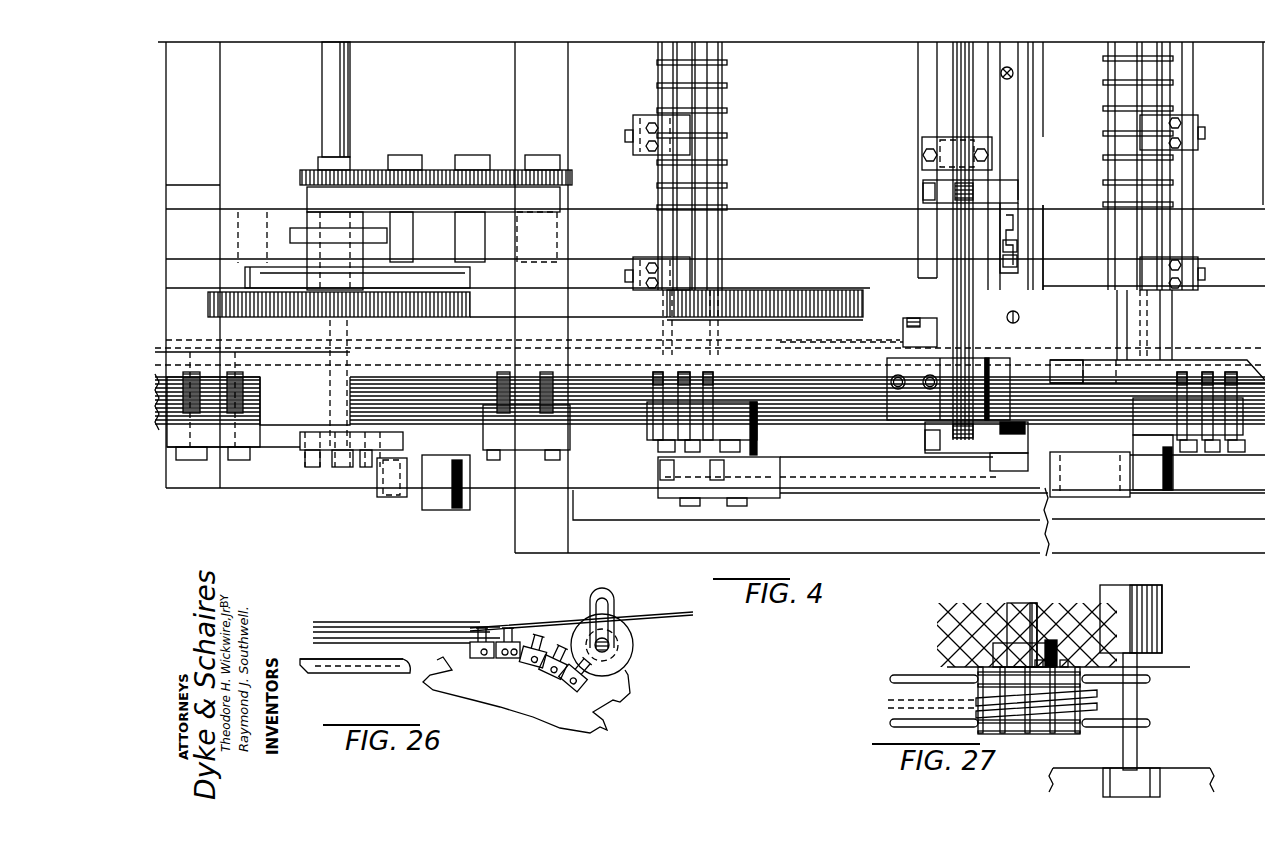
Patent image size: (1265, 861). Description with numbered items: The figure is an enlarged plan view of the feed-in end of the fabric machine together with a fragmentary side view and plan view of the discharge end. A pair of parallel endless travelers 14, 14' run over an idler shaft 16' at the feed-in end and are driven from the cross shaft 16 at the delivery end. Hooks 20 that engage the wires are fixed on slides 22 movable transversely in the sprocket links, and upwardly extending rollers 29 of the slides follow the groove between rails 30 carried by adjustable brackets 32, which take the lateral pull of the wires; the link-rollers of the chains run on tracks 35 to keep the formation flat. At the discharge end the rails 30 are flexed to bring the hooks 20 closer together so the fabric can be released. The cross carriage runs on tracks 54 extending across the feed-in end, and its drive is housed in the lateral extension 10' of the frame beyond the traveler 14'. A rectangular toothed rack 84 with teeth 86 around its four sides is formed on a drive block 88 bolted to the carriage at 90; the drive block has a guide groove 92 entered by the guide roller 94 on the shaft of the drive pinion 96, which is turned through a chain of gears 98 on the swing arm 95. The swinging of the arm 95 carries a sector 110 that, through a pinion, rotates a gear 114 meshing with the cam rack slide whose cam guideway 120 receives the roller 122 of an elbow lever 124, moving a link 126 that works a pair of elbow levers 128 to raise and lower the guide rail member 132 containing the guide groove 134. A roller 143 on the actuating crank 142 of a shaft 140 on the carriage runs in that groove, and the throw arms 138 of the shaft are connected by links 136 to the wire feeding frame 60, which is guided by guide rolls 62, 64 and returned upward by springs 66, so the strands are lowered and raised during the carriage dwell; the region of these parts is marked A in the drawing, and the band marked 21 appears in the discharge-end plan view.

In FIG. 4, the chain of gears 98 is at (300, 176).
In FIG. 4, the swing arm 95 is at (313, 197).
In FIG. 4, the sector 110 is at (247, 280).
In FIG. 4, the drive pinion 96 is at (518, 305).
In FIG. 4, the teeth 86 is at (765, 294).
In FIG. 4, the toothed rack 84 is at (828, 292).
In FIG. 4, the guide roller 94 is at (515, 331).
In FIG. 4, the drive block 88 is at (597, 327).
In FIG. 4, the bracket 32 is at (633, 118).
In FIG. 4, the wire feeding frame 60 is at (1022, 139).
In FIG. 4, the traveler 14' is at (718, 166).
In FIG. 4, the traveler 14 is at (1121, 166).
In FIG. 4, the slide 22 is at (723, 63).
In FIG. 27, the slide 22 is at (1057, 640).
In FIG. 4, the hook 20 is at (723, 85).
In FIG. 26, the hook 20 is at (497, 625).
In FIG. 27, the hook 20 is at (1082, 660).
In FIG. 4, the roller 29 is at (682, 93).
In FIG. 4, the rail 30 is at (677, 198).
In FIG. 26, the rail 30 is at (467, 628).
In FIG. 27, the rail 30 is at (1063, 710).
In FIG. 4, the track 35 is at (1167, 238).
In FIG. 26, the track 35 is at (382, 672).
In FIG. 4, the shaft 140 is at (953, 105).
In FIG. 4, the spring 66 is at (1010, 70).
In FIG. 4, the throw arm 138 is at (1002, 188).
In FIG. 4, the link 136 is at (1017, 196).
In FIG. 4, the guide roll 62 is at (1013, 248).
In FIG. 4, the guide roll 64 is at (1013, 263).
In FIG. 4, the detail area A is at (1052, 312).
In FIG. 4, the bolts 90 is at (925, 318).
In FIG. 4, the guide groove 92 is at (878, 342).
In FIG. 4, the idler shaft 16' is at (1083, 360).
In FIG. 4, the track 54 is at (1157, 360).
In FIG. 4, the actuating crank 142 is at (990, 440).
In FIG. 4, the roller 143 is at (1023, 462).
In FIG. 4, the guide groove 134 is at (958, 477).
In FIG. 4, the guide rail member 132 is at (870, 491).
In FIG. 4, the link 126 is at (627, 487).
In FIG. 4, the elbow lever 128 is at (768, 446).
In FIG. 4, the roller 122 is at (403, 440).
In FIG. 4, the cam guideway 120 is at (268, 448).
In FIG. 4, the gear 114 is at (300, 440).
In FIG. 4, the lateral extension 10' is at (603, 506).
In FIG. 4, the elbow lever 124 is at (417, 478).
In FIG. 27, the cross shaft 16 is at (1010, 622).
In FIG. 27, the band 21 is at (1097, 698).